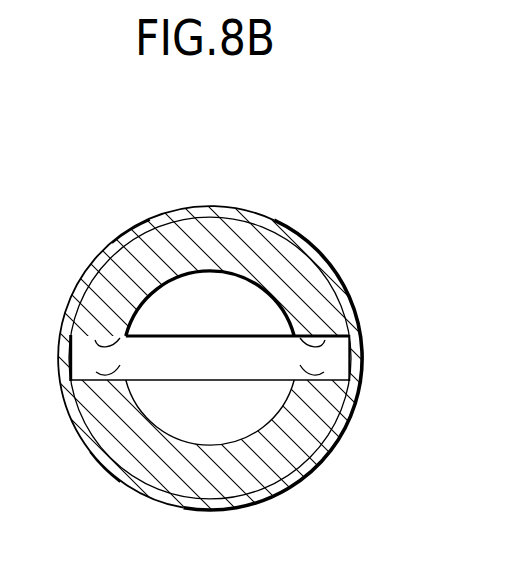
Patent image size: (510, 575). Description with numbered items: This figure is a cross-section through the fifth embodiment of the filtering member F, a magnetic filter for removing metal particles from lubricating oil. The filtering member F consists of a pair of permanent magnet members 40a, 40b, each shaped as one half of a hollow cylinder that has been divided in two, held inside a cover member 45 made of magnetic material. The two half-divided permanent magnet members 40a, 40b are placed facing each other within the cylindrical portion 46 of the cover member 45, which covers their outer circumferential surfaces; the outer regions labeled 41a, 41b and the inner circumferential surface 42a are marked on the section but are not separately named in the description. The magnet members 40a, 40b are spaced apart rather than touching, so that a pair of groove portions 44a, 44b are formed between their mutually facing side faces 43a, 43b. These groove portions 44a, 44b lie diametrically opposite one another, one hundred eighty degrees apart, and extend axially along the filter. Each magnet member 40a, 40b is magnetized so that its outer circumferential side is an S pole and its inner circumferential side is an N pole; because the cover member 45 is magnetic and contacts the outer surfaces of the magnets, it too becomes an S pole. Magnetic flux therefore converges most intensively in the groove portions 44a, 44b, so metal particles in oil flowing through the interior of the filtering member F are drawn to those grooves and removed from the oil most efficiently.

The filtering member F is at (322, 157).
The permanent magnet member 40a is at (253, 237).
The permanent magnet member 40b is at (263, 477).
The upper yoke (shell) half 41a is at (329, 252).
The lower yoke (shell) half 41b is at (325, 459).
The inner magnetic pole surface of upper magnet 42a is at (182, 278).
The side face 43a is at (73, 322).
The side face 43b is at (100, 379).
The groove portion 44a is at (67, 385).
The groove portion 44b is at (316, 362).
The cover member 45 is at (104, 240).
The cylindrical portion 46 is at (93, 455).